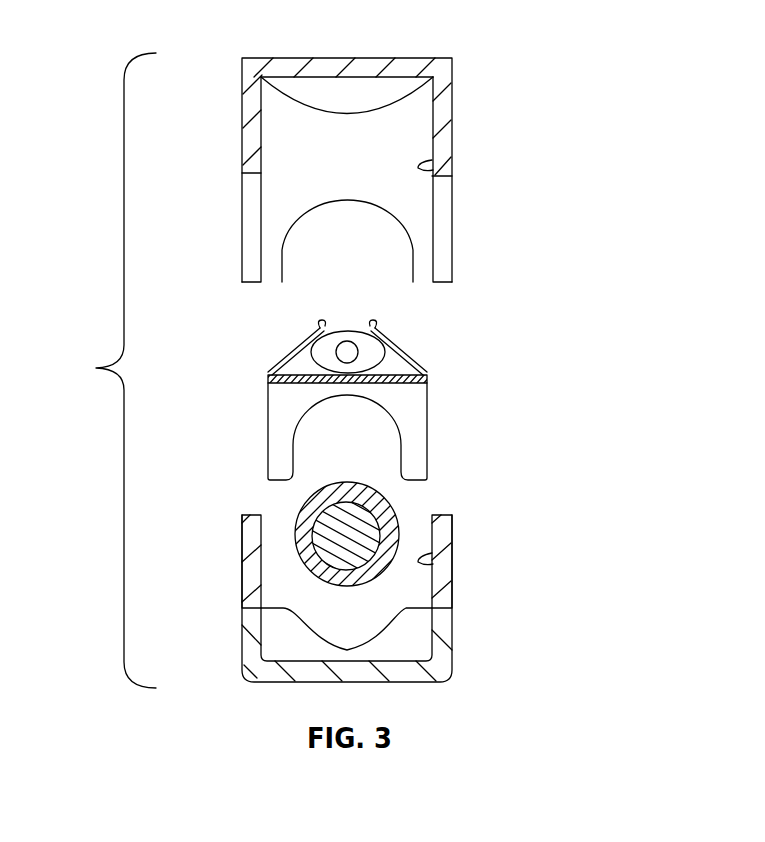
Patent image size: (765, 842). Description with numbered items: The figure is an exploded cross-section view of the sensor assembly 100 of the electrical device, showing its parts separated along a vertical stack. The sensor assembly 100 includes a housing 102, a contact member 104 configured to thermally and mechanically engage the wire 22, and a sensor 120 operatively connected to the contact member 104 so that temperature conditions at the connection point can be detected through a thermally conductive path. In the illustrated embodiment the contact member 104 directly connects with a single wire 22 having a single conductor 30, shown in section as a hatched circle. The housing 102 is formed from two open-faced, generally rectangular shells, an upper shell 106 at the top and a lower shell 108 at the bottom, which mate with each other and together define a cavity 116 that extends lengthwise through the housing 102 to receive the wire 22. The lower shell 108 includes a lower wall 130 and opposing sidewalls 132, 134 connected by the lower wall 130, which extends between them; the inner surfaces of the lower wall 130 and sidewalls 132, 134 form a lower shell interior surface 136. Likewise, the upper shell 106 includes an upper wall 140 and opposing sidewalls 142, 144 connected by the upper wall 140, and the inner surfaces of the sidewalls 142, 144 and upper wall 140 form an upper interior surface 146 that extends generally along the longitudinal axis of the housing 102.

The sensor assembly 100 is at (302, 360).
The housing 102 is at (351, 170).
The contact member 104 is at (393, 394).
The upper shell 106 is at (253, 55).
The lower shell 108 is at (351, 618).
The cavity 116 is at (407, 302).
The sensor 120 is at (336, 350).
The lower wall 130 is at (363, 682).
The sidewall 132 is at (452, 625).
The sidewall 134 is at (242, 625).
The lower shell interior surface 136 is at (432, 562).
The upper wall 140 is at (415, 57).
The sidewall 142 is at (452, 148).
The sidewall 144 is at (242, 150).
The upper interior surface 146 is at (432, 170).
The wire 22 is at (344, 539).
The conductor 30 is at (310, 540).